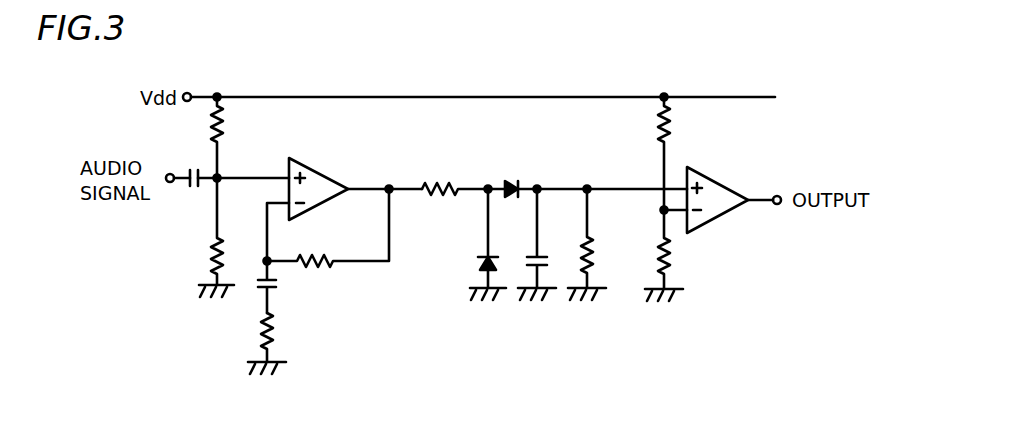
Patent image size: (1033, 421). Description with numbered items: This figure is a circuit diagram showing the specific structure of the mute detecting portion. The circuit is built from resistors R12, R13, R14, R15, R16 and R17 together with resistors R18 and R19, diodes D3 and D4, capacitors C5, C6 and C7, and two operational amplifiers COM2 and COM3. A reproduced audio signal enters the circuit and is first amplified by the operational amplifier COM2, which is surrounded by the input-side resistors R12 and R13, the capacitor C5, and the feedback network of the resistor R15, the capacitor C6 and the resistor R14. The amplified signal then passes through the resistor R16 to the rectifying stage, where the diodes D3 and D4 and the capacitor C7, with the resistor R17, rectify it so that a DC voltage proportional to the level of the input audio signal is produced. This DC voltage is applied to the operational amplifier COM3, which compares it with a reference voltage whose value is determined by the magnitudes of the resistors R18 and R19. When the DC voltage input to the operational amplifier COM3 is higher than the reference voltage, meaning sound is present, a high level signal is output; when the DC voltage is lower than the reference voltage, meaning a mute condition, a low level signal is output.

The resistor R12 is at (238, 137).
The resistor R13 is at (197, 237).
The resistor R14 is at (285, 343).
The resistor R15 is at (328, 228).
The resistor R16 is at (453, 177).
The resistor R17 is at (602, 244).
The resistor R18 is at (686, 153).
The resistor R19 is at (680, 255).
The capacitor C5 is at (193, 165).
The capacitor C6 is at (284, 287).
The capacitor C7 is at (544, 244).
The diode D3 is at (478, 244).
The diode D4 is at (519, 178).
The operational amplifier COM2 is at (333, 183).
The operational amplifier COM3 is at (732, 196).